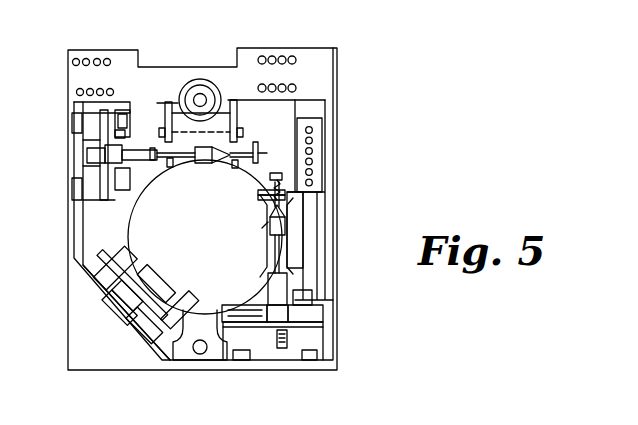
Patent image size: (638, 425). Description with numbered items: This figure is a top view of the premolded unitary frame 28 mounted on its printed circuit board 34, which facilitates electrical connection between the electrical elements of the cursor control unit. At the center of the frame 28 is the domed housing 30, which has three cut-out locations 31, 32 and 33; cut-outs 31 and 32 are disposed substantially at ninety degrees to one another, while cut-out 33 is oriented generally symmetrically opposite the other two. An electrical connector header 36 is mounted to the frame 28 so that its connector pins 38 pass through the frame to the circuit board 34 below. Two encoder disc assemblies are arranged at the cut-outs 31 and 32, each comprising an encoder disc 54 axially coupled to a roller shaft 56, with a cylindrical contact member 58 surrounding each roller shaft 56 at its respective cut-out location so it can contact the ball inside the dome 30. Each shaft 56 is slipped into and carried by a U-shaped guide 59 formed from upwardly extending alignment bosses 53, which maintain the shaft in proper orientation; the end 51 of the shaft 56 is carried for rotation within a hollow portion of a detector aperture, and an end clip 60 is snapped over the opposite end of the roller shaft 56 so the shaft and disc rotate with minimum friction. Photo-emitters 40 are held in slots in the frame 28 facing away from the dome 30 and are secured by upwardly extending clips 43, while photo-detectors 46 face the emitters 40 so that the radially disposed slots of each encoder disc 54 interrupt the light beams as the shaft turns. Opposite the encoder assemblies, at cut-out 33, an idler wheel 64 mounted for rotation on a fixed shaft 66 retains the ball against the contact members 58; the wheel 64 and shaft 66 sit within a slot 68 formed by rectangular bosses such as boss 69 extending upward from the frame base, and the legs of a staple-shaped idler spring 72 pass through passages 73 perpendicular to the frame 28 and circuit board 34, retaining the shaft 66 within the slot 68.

The unitary frame 28 is at (90, 222).
The domed housing 30 is at (205, 237).
The cut-out location 31 is at (204, 179).
The cut-out location 32 is at (265, 228).
The cut-out location 33 is at (153, 290).
The printed circuit board 34 is at (320, 68).
The electrical connector header 36 is at (312, 153).
The connector pins 38 is at (313, 162).
The photo-emitter 40 is at (125, 117).
The clip 43 is at (120, 135).
The photo-detector 46 is at (78, 124).
The end of roller shaft 51 is at (309, 140).
The alignment bosses 53 is at (378, 235).
The encoder disc 54 is at (105, 118).
The roller shaft 56 is at (252, 150).
The cylindrical contact member 58 is at (205, 150).
The U-shaped guide 59 is at (282, 192).
The end clip 60 is at (275, 172).
The idler wheel 64 is at (125, 310).
The fixed shaft 66 is at (125, 293).
The slot 68 is at (137, 318).
The rectangular boss 69 is at (97, 270).
The idler spring 72 is at (123, 263).
The passages 73 is at (187, 333).